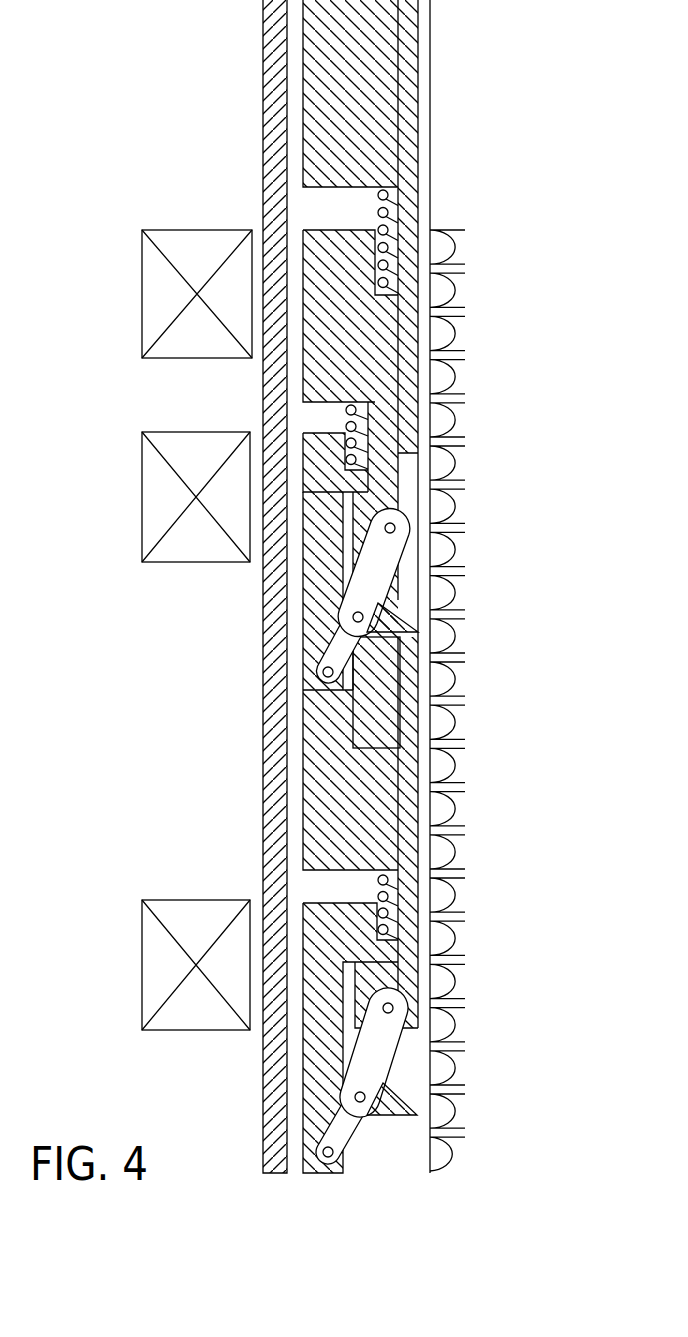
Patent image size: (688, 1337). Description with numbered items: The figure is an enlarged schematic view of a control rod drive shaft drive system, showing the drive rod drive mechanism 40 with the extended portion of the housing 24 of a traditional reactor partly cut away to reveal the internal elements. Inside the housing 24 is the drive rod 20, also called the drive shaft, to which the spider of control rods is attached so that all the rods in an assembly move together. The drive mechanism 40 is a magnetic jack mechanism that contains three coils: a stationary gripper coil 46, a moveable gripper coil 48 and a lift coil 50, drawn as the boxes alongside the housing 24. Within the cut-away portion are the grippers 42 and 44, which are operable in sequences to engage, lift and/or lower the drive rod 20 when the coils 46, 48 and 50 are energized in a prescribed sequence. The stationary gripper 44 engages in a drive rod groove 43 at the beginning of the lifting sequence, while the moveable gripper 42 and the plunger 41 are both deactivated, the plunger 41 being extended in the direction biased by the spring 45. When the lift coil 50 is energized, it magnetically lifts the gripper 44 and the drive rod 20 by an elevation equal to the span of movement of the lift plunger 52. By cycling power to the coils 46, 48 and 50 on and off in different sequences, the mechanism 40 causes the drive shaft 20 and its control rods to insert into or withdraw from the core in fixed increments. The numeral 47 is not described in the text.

The drive rod 20 is at (460, 375).
The housing 24 is at (263, 93).
The drive rod drive mechanism 40 is at (488, 498).
The plunger 41 is at (310, 574).
The moveable gripper 42 is at (400, 590).
The drive rod groove 43 is at (443, 635).
The stationary gripper 44 is at (382, 1077).
The spring 45 is at (347, 424).
The stationary gripper coil 46 is at (142, 935).
The housing 47 is at (445, 103).
The moveable gripper coil 48 is at (142, 465).
The lift coil 50 is at (142, 272).
The lift plunger 52 is at (310, 358).